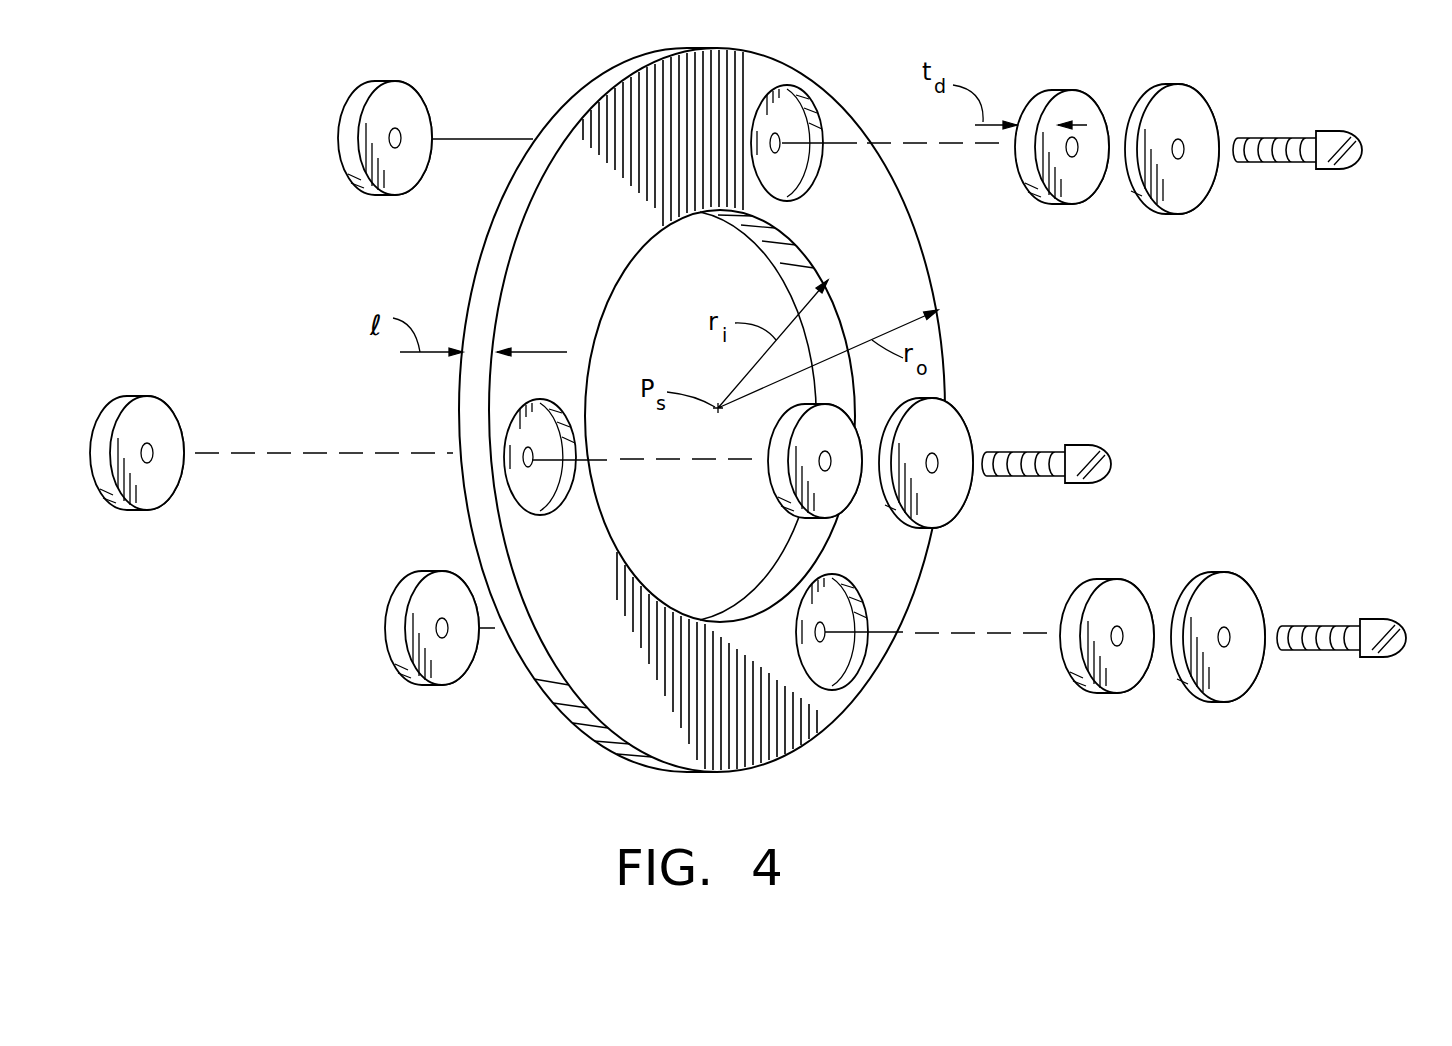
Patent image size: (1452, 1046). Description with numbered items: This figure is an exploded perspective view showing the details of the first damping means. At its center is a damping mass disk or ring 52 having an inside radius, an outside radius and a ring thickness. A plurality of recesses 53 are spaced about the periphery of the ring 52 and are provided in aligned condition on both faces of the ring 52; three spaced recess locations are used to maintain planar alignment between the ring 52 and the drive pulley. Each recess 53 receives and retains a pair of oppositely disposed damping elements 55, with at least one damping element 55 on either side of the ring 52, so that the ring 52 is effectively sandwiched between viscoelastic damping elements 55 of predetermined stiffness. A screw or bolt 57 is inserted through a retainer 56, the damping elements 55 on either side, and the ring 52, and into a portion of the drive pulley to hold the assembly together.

The damping mass disk 52 is at (822, 732).
The recesses 53 is at (797, 112).
The damping elements 55 is at (350, 167).
The retainer 56 is at (1190, 107).
The screw or bolt 57 is at (1327, 167).